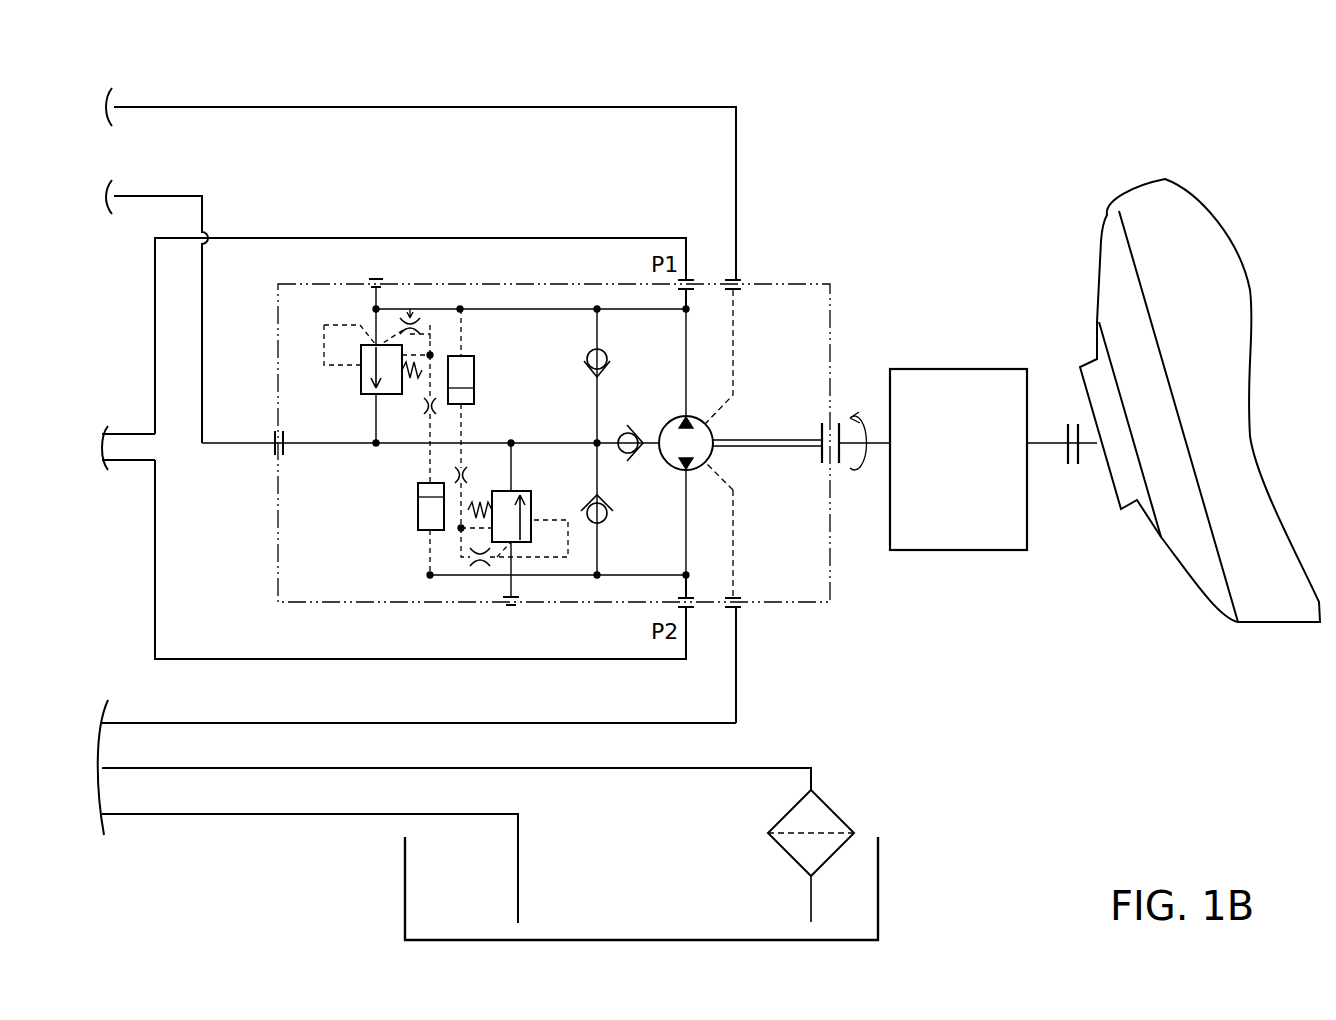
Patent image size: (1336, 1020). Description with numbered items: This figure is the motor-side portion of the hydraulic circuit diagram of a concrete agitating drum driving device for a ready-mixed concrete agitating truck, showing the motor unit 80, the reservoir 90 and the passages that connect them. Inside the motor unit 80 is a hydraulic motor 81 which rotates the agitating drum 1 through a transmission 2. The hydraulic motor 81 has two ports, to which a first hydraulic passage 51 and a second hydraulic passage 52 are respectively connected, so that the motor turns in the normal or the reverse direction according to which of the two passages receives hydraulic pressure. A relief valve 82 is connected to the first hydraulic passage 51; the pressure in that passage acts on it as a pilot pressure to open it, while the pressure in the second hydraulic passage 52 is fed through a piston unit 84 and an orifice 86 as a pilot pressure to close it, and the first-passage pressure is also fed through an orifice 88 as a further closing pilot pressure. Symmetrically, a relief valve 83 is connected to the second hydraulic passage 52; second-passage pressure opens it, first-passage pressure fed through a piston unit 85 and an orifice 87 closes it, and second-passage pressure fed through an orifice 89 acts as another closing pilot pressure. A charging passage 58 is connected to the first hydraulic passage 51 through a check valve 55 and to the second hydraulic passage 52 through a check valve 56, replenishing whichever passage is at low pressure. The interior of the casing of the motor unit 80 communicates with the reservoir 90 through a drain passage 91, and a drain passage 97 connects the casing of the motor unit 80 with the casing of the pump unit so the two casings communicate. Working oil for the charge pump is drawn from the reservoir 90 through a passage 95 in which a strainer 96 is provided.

The agitating drum 1 is at (1140, 192).
The transmission 2 is at (955, 369).
The first hydraulic passage 51 is at (272, 238).
The second hydraulic passage 52 is at (292, 659).
The check valve 55 is at (584, 362).
The check valve 56 is at (607, 520).
The charging passage 58 is at (172, 196).
The motor unit 80 is at (812, 284).
The hydraulic motor 81 is at (668, 424).
The relief valve 82 is at (361, 385).
The relief valve 83 is at (531, 500).
The piston unit 84 is at (418, 520).
The piston unit 85 is at (474, 380).
The orifice 86 is at (424, 412).
The orifice 87 is at (455, 475).
The orifice 88 is at (410, 316).
The orifice 89 is at (478, 568).
The reservoir 90 is at (880, 873).
The drain passage 91 is at (372, 107).
The passage 95 is at (772, 768).
The strainer 96 is at (828, 803).
The drain passage 97 is at (738, 665).